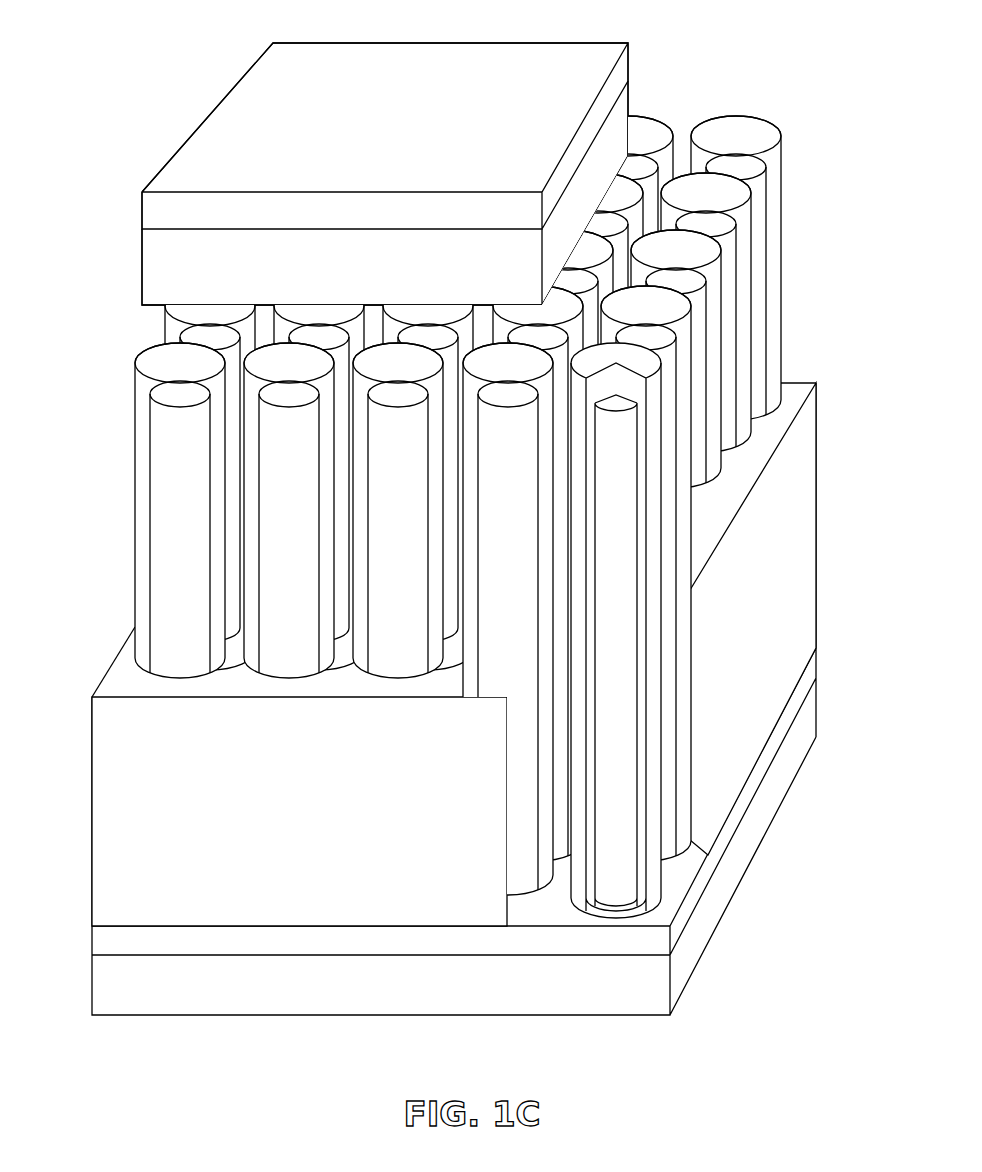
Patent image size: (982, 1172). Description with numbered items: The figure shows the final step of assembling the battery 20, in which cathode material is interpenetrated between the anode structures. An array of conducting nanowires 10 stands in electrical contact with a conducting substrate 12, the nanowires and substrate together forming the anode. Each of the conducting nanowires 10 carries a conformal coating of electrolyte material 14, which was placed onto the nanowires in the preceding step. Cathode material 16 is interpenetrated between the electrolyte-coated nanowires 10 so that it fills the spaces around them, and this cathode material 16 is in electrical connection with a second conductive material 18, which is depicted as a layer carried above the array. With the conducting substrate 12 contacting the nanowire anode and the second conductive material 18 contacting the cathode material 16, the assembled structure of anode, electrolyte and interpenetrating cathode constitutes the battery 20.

The conducting nanowires 10 is at (627, 552).
The conducting substrate 12 is at (286, 995).
The electrolyte material 14 is at (784, 251).
The cathode material 16 is at (395, 275).
The second conductive material 18 is at (418, 75).
The battery 20 is at (341, 154).